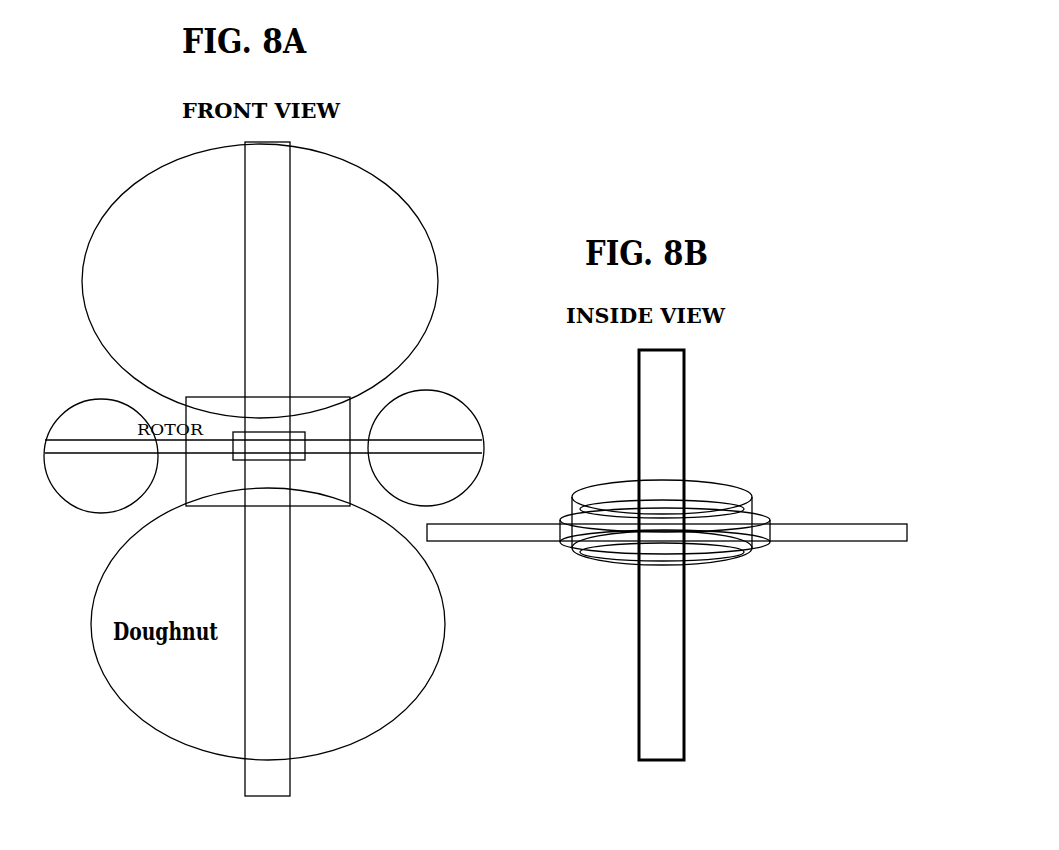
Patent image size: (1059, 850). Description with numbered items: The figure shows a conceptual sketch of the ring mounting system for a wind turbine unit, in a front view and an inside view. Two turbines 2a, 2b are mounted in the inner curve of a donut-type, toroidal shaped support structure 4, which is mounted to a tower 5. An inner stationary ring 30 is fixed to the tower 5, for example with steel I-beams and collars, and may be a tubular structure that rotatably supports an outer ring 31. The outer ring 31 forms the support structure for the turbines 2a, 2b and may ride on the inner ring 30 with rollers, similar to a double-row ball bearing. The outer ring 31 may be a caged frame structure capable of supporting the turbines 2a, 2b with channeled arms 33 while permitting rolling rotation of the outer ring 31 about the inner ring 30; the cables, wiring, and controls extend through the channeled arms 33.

In FIG. 8A, the toroidal shaped support structure 4 is at (370, 174).
In FIG. 8A, the turbine 2a is at (428, 390).
In FIG. 8A, the turbine 2b is at (55, 422).
In FIG. 8A, the tower 5 is at (275, 783).
In FIG. 8B, the tower 5 is at (613, 738).
In FIG. 8B, the inner stationary ring 30 is at (718, 485).
In FIG. 8B, the outer ring 31 is at (757, 552).
In FIG. 8B, the channeled arms 33 is at (827, 524).